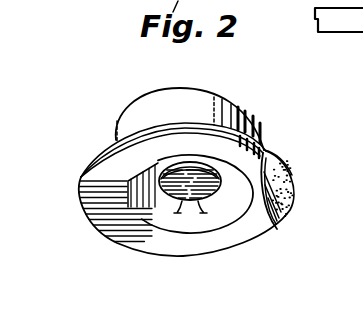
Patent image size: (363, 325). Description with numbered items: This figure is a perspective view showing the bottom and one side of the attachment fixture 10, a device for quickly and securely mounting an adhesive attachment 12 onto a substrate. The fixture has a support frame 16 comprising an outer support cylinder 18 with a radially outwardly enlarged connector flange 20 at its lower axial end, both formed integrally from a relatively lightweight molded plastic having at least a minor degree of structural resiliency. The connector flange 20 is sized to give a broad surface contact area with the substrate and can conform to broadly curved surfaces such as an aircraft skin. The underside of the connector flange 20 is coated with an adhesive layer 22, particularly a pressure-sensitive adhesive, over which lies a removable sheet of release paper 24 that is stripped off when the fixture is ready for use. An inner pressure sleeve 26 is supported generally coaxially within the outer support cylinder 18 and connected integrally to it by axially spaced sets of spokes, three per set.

The attachment fixture 10 is at (111, 93).
The adhesive attachment 12 is at (163, 197).
The support frame 16 is at (267, 133).
The outer support cylinder 18 is at (167, 104).
The connector flange 20 is at (104, 152).
The adhesive layer 22 is at (297, 193).
The release paper 24 is at (221, 243).
The inner pressure sleeve 26 is at (210, 160).